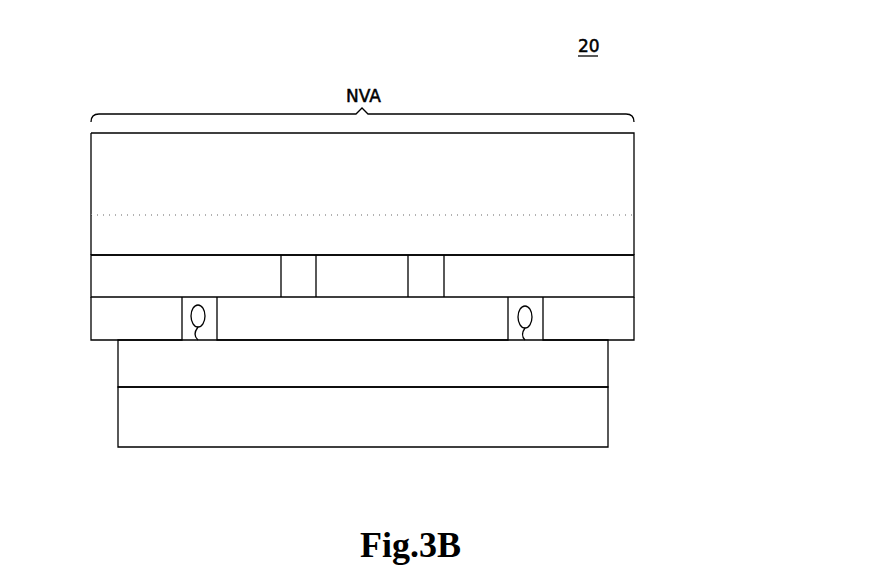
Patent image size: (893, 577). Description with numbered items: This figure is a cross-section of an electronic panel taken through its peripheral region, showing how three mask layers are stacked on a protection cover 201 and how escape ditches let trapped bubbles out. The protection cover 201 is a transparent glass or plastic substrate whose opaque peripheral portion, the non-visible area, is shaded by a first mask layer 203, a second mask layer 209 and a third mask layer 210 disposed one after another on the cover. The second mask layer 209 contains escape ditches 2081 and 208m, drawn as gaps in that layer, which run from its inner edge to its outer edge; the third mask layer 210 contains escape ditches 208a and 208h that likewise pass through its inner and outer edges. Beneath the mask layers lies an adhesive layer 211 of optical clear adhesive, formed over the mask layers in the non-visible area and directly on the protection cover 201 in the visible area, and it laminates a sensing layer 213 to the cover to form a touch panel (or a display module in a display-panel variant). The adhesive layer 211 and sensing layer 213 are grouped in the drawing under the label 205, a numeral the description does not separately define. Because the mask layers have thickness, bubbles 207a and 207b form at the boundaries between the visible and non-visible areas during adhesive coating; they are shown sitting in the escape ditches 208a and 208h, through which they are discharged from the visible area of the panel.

The protection cover 201 is at (610, 171).
The first mask layer 203 is at (615, 233).
The second mask layer 209 is at (615, 278).
The escape ditch 208m is at (299, 283).
The escape ditch 2081 is at (426, 283).
The third mask layer 210 is at (623, 328).
The escape ditch 208a is at (191, 321).
The escape ditch 208h is at (538, 311).
The bubble 207a is at (198, 338).
The bubble 207b is at (525, 338).
The adhesive layer 211 is at (595, 368).
The sensing layer 213 is at (593, 422).
The array substrate 205 is at (358, 393).